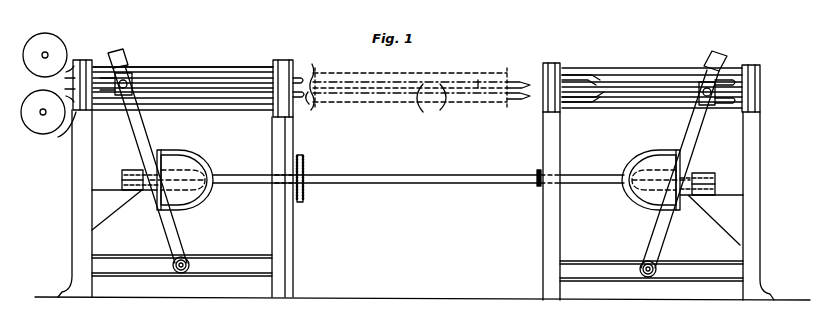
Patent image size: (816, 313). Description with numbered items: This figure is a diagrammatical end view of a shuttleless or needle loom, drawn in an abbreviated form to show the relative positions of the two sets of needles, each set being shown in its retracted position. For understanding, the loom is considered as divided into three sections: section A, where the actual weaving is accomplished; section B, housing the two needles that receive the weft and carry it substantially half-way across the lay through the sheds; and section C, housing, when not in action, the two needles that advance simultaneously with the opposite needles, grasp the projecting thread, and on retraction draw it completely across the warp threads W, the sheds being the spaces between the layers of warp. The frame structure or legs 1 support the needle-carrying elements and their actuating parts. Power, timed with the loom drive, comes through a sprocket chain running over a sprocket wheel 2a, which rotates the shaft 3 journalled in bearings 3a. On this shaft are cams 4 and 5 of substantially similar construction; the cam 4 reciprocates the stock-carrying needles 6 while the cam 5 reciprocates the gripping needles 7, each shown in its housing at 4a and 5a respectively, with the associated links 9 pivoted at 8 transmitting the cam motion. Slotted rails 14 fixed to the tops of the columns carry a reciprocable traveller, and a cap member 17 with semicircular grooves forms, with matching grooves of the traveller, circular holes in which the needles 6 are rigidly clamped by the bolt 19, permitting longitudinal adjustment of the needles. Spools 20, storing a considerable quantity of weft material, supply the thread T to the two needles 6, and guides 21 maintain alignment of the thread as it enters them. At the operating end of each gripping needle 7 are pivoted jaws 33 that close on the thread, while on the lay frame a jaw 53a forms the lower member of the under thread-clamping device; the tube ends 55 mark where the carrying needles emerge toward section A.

The frame structure or legs 1 is at (80, 176).
The sprocket wheel 2a is at (304, 165).
The shaft 3 is at (386, 173).
The bearings 3a is at (126, 168).
The cam 4 is at (184, 195).
The left guard 4a is at (193, 153).
The cam 5 is at (650, 195).
The right guard 5a is at (632, 160).
The stock-carrying needles 6 is at (236, 92).
The gripping needles 7 is at (648, 88).
The pivot 8 is at (190, 262).
The lever 9 is at (167, 227).
The slotted rails 14 is at (153, 72).
The cap member 17 is at (121, 97).
The bolt 19 is at (712, 105).
The spools 20 is at (36, 103).
The guides 21 is at (70, 72).
The jaws 33 is at (518, 99).
The jaw 53a is at (312, 98).
The tube ends 55 is at (313, 72).
The section A is at (410, 81).
The section B is at (183, 53).
The section C is at (652, 77).
The thread T is at (367, 97).
The warp threads W is at (431, 103).